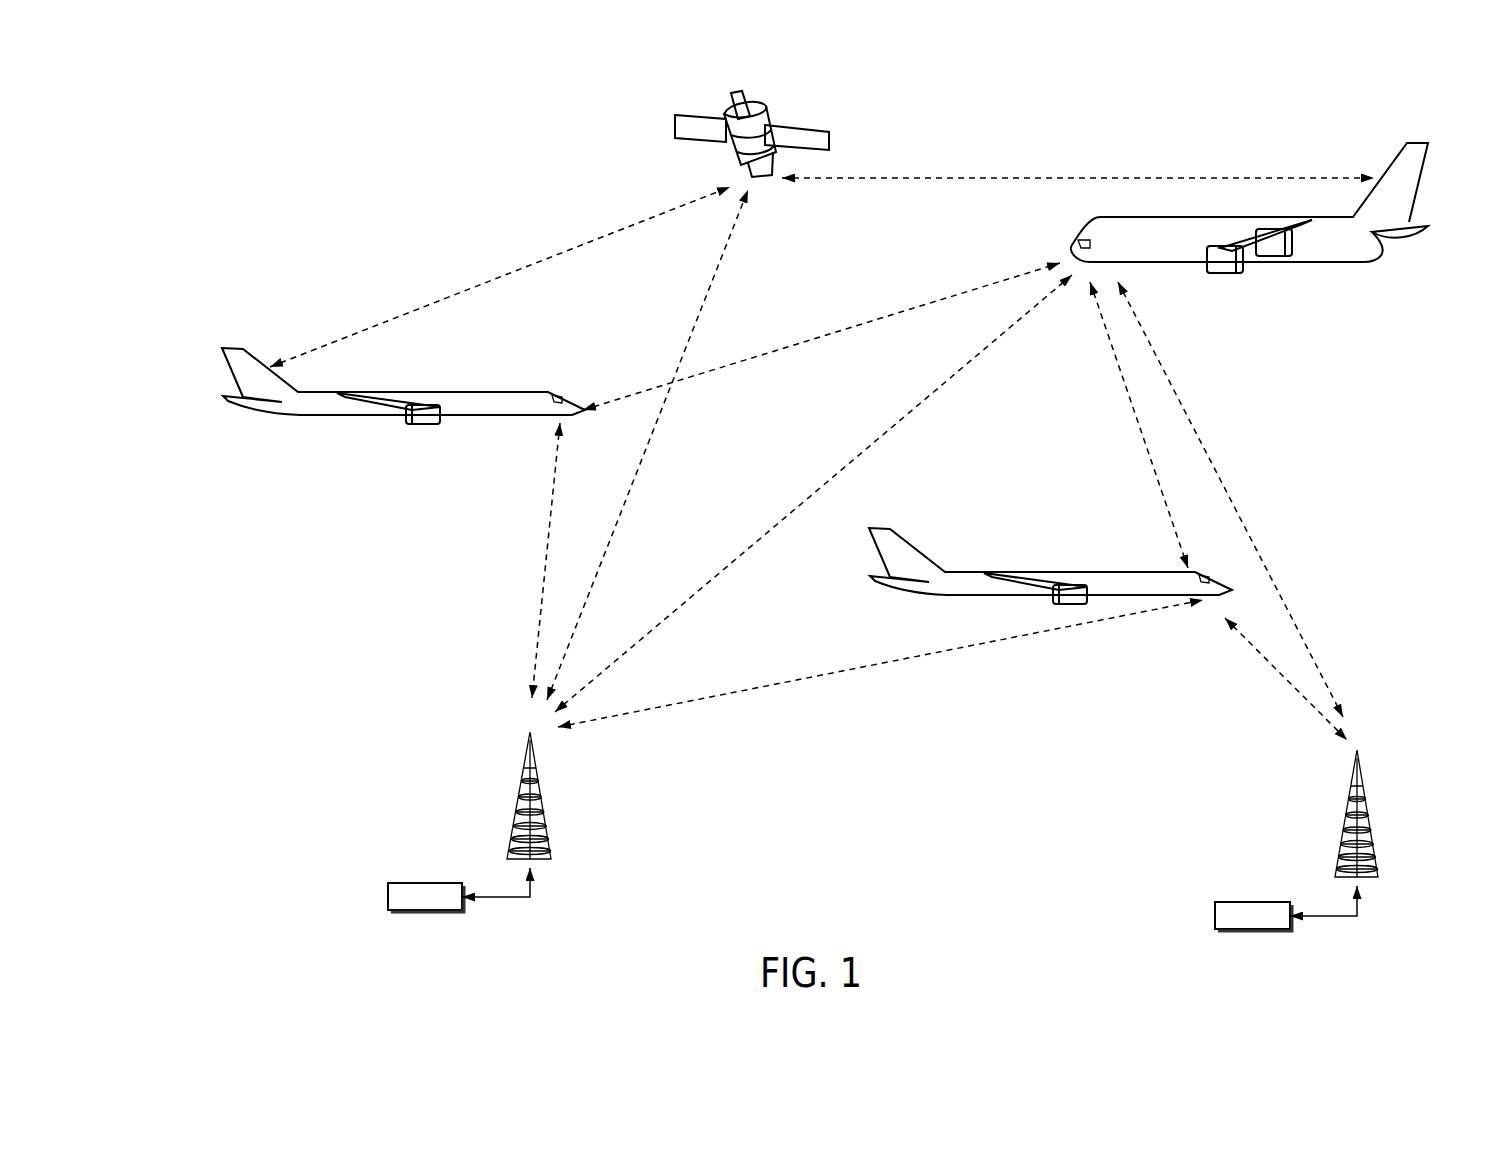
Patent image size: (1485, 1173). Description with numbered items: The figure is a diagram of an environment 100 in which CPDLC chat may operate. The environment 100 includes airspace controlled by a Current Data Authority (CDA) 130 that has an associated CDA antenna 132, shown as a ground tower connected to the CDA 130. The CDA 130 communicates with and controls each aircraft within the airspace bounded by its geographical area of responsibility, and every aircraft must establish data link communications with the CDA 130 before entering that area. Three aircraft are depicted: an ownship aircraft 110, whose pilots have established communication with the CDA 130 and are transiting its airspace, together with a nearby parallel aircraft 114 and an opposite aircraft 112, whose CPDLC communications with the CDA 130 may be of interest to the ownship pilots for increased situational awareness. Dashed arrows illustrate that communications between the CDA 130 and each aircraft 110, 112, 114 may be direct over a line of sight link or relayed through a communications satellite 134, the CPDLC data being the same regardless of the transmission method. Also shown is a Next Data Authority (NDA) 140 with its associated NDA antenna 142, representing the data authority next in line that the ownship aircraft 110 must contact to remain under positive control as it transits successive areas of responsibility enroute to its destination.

The environment 100 is at (178, 146).
The ownship aircraft 110 is at (277, 417).
The opposite aircraft 112 is at (1310, 262).
The parallel aircraft 114 is at (1105, 572).
The Current Data Authority (CDA) 130 is at (448, 883).
The CDA antenna 132 is at (548, 836).
The communications satellite 134 is at (700, 140).
The Next Data Authority (NDA) 140 is at (1275, 902).
The NDA antenna 142 is at (1375, 855).